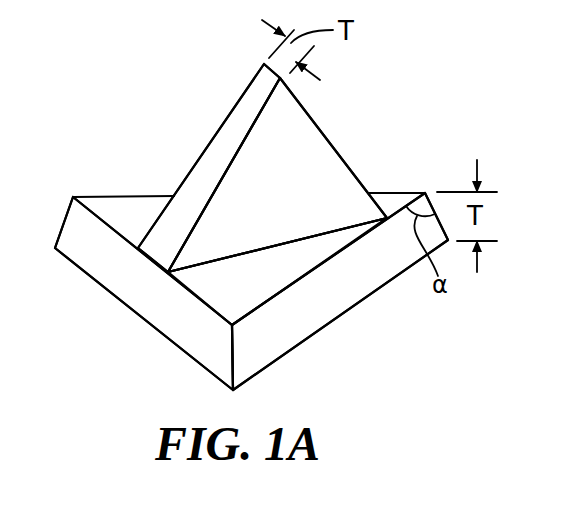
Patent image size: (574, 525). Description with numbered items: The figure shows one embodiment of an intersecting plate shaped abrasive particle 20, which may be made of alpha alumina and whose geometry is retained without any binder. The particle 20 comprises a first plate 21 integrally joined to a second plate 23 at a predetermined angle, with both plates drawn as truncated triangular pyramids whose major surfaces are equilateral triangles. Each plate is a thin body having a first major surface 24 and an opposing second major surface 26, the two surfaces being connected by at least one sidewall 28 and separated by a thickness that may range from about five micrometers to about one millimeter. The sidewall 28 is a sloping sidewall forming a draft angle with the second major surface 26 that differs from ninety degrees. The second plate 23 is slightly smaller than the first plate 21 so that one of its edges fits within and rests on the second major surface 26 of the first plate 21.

The intersecting plate shaped abrasive particle 20 is at (251, 211).
The first plate 21 is at (251, 291).
The second plate 23 is at (325, 127).
The first major surface 24 is at (262, 197).
The second major surface 26 is at (203, 153).
The sidewall 28 is at (321, 298).